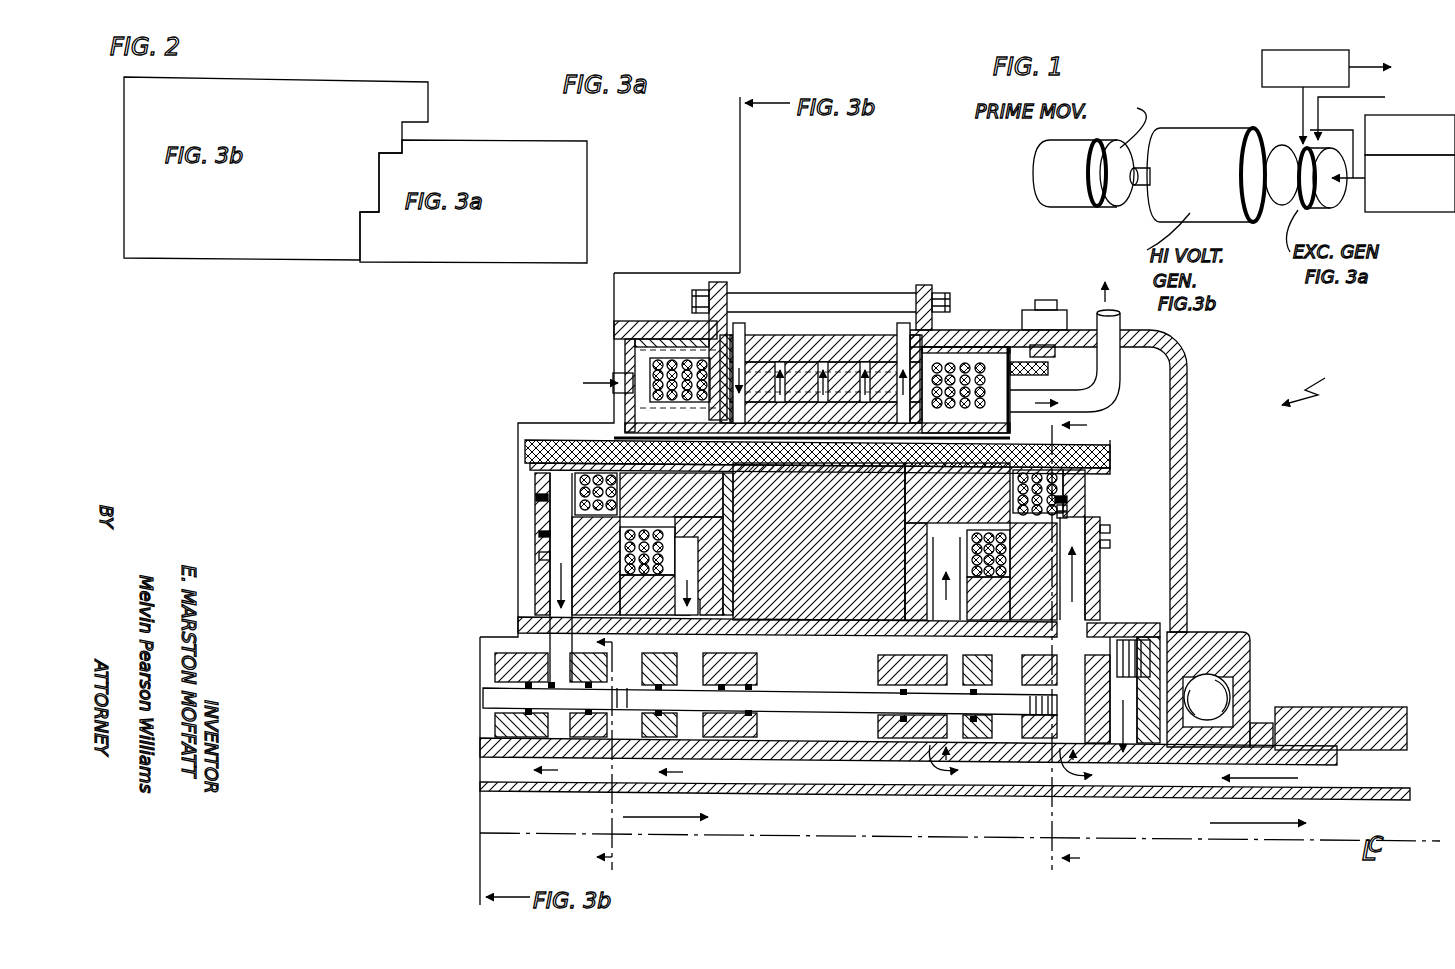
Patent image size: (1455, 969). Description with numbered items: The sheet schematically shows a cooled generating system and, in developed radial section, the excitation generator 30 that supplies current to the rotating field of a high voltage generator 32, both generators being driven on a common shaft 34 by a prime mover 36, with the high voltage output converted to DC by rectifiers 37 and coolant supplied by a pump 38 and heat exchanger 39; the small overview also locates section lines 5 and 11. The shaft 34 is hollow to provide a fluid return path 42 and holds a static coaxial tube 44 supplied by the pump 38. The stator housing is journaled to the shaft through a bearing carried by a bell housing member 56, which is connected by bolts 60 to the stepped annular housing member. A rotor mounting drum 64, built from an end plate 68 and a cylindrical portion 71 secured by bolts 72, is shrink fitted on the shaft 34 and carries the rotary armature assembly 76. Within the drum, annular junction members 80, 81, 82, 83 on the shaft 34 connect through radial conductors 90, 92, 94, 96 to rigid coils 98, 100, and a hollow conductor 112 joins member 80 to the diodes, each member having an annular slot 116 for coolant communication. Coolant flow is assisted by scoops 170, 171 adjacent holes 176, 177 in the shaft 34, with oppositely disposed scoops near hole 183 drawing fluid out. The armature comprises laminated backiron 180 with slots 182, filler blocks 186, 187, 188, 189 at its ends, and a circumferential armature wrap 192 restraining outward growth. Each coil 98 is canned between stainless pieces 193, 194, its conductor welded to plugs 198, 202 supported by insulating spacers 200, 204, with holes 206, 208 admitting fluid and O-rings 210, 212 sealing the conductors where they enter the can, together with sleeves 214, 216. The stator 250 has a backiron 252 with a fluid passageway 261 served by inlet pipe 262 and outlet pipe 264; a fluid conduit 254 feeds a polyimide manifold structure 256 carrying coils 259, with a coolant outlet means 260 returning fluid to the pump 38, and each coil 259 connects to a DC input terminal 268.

In FIG. 1, the excitation generator 30 is at (1300, 205).
In FIG. 3A, the excitation generator 30 is at (1319, 379).
In FIG. 1, the high voltage generator 32 is at (1200, 136).
In FIG. 1, the common shaft 34 is at (1145, 186).
In FIG. 3A, the common shaft 34 is at (545, 750).
In FIG. 1, the prime mover 36 is at (1033, 176).
In FIG. 1, the rectifiers 37 is at (1262, 63).
In FIG. 1, the pump 38 is at (1400, 212).
In FIG. 1, the heat exchanger 39 is at (1366, 122).
In FIG. 3A, the section line 5 is at (624, 753).
In FIG. 3A, the section line 11 is at (1084, 642).
In FIG. 3A, the fluid return path 42 is at (880, 845).
In FIG. 3A, the tube 44 is at (1000, 795).
In FIG. 3A, the bell housing member 56 is at (1180, 582).
In FIG. 3A, the bolts 60 is at (868, 305).
In FIG. 3A, the rotor mounting drum 64 is at (1105, 595).
In FIG. 3A, the end plate 68 is at (1248, 651).
In FIG. 3A, the cylindrical portion 71 is at (930, 645).
In FIG. 3A, the bolts 72 is at (1180, 623).
In FIG. 3A, the rotary armature assembly 76 is at (1105, 516).
In FIG. 3A, the annular junction member 80 is at (945, 786).
In FIG. 3A, the annular junction member 81 is at (878, 720).
In FIG. 3A, the annular junction member 82 is at (740, 668).
In FIG. 3A, the annular junction member 83 is at (495, 660).
In FIG. 3A, the conductor 90 is at (1088, 575).
In FIG. 3A, the conductor 92 is at (518, 625).
In FIG. 3A, the conductor 94 is at (878, 672).
In FIG. 3A, the conductor 96 is at (705, 645).
In FIG. 3A, the coil 98 is at (536, 505).
In FIG. 3A, the coil 100 is at (1005, 598).
In FIG. 3A, the conductor 112 is at (726, 727).
In FIG. 3A, the annular slot 116 is at (485, 725).
In FIG. 3A, the scoop 170 is at (1100, 760).
In FIG. 3A, the scoop 171 is at (960, 772).
In FIG. 3A, the hole 176 is at (1035, 762).
In FIG. 3A, the hole 177 is at (935, 762).
In FIG. 3A, the laminated backiron 180 is at (819, 541).
In FIG. 3A, the slot 182 is at (690, 757).
In FIG. 3A, the hole 183 is at (560, 752).
In FIG. 3A, the filler block 186 is at (1280, 563).
In FIG. 3A, the filler block 187 is at (877, 541).
In FIG. 3A, the filler block 188 is at (762, 544).
In FIG. 3A, the filler block 189 is at (540, 587).
In FIG. 3A, the armature wrap 192 is at (1112, 456).
In FIG. 3A, the can piece 193 is at (525, 440).
In FIG. 3A, the can piece 194 is at (540, 490).
In FIG. 3A, the conductive plug 198 is at (540, 470).
In FIG. 3A, the insulating spacer 200 is at (575, 445).
In FIG. 3A, the conductive plug 202 is at (1097, 477).
In FIG. 3A, the insulating spacer 204 is at (1060, 478).
In FIG. 3A, the hole 206 is at (1108, 524).
In FIG. 3A, the hole 208 is at (540, 518).
In FIG. 3A, the O-ring 210 is at (1112, 546).
In FIG. 3A, the O-ring 212 is at (538, 537).
In FIG. 3A, the seal ring 214 is at (1095, 530).
In FIG. 3A, the spacer 216 is at (538, 557).
In FIG. 3A, the stator 250 is at (795, 300).
In FIG. 3A, the backiron 252 is at (703, 320).
In FIG. 3A, the fluid conduit 254 is at (630, 367).
In FIG. 3A, the manifold structure 256 is at (622, 337).
In FIG. 3A, the coil 259 is at (967, 342).
In FIG. 3A, the coolant outlet means 260 is at (1113, 377).
In FIG. 3A, the fluid passageway 261 is at (792, 360).
In FIG. 3A, the inlet pipe 262 is at (780, 330).
In FIG. 3A, the outlet pipe 264 is at (895, 325).
In FIG. 3A, the DC input terminal 268 is at (1045, 300).